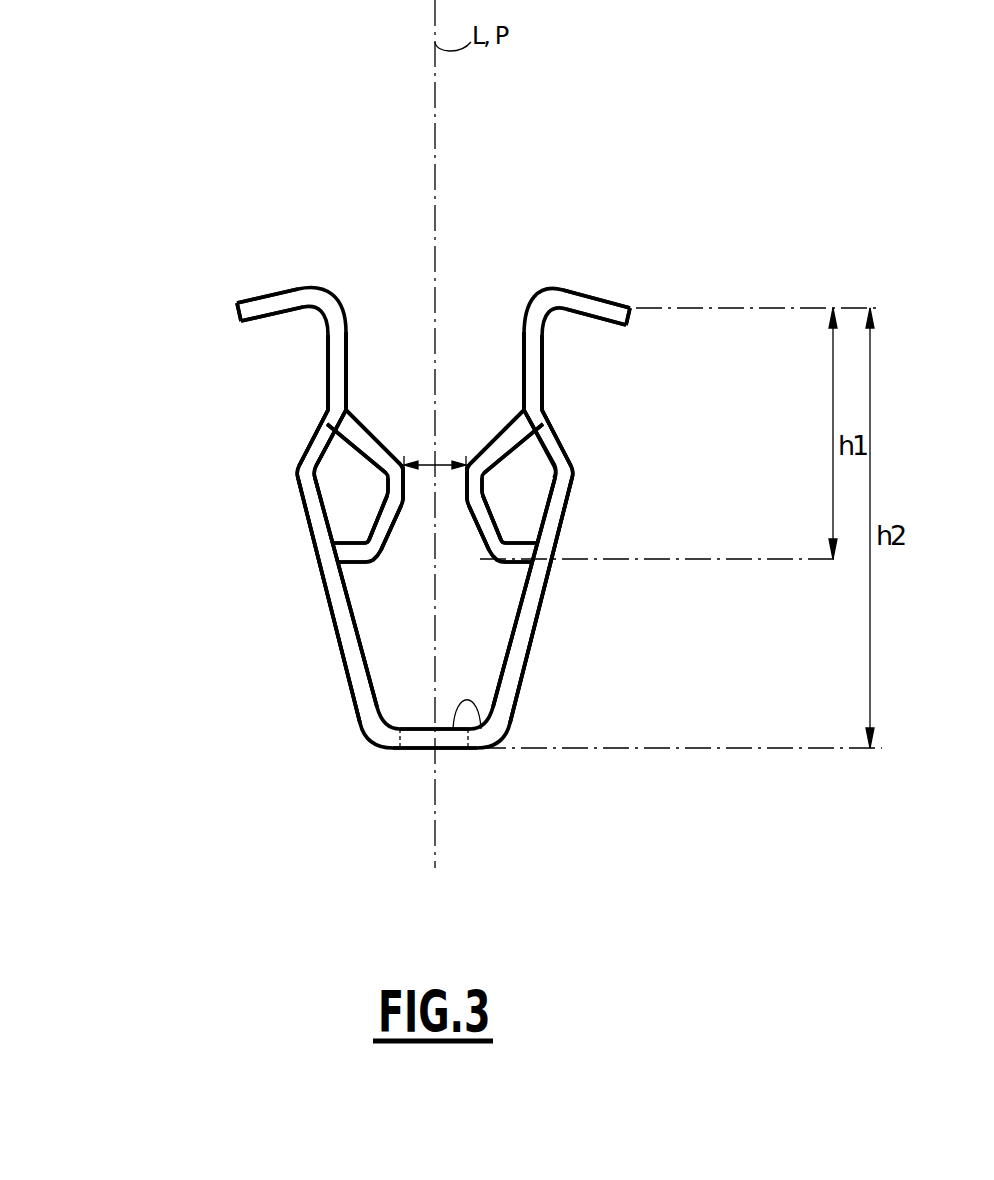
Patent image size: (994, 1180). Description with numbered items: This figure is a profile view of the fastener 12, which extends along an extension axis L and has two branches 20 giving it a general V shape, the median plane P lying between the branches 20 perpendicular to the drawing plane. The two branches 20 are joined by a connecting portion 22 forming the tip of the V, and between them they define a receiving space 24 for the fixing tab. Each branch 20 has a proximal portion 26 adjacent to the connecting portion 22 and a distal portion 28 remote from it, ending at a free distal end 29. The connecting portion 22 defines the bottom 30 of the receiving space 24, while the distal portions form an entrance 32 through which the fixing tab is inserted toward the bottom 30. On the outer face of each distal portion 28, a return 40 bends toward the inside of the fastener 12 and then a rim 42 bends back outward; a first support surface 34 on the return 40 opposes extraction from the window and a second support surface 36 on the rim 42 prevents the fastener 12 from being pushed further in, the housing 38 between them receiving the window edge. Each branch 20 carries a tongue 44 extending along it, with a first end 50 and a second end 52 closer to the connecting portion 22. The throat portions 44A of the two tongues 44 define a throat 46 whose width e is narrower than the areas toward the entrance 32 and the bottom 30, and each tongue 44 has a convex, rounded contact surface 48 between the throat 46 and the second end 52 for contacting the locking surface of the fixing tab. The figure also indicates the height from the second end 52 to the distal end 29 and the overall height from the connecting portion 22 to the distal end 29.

The fastener 12 is at (140, 236).
The branches 20 is at (203, 629).
The connecting portion 22 is at (412, 750).
The receiving space 24 is at (427, 404).
The proximal portion 26 is at (308, 691).
The distal portion 28 is at (170, 482).
The distal end 29 is at (237, 302).
The bottom 30 is at (472, 716).
The entrance 32 is at (408, 300).
The first support surface 34 is at (316, 450).
The second support surface 36 is at (266, 324).
The housing 38 is at (292, 356).
The return 40 is at (322, 452).
The rim 42 is at (268, 303).
The tongue 44 is at (348, 516).
The throat portion 44A is at (405, 505).
The throat 46 is at (454, 429).
The contact surface 48 is at (360, 575).
The first end 50 is at (358, 436).
The second end 52 is at (347, 553).